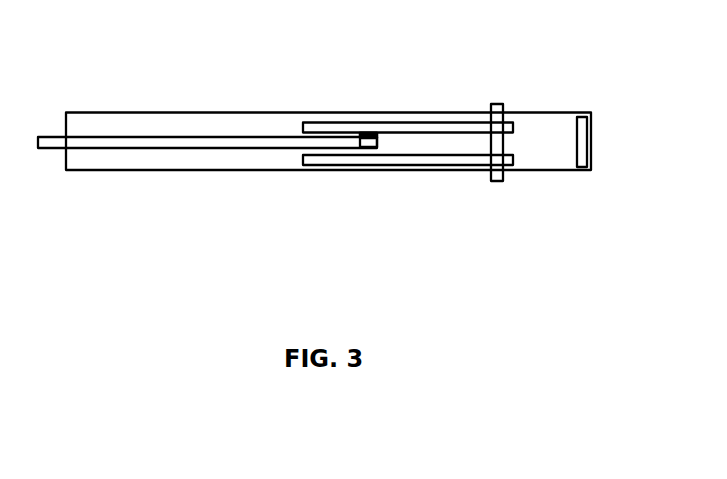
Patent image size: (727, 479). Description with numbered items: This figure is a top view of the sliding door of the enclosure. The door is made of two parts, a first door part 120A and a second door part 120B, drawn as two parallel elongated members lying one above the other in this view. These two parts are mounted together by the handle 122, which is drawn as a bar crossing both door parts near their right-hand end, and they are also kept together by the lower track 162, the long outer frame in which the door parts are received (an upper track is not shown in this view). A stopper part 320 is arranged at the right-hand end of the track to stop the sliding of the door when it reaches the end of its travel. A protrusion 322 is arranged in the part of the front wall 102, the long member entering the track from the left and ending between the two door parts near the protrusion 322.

The lower track 162 is at (73, 111).
The front wall 102 is at (107, 148).
The second door part 120B is at (349, 121).
The first door part 120A is at (458, 165).
The protrusion 322 is at (370, 148).
The handle 122 is at (493, 104).
The stopper part 320 is at (578, 117).